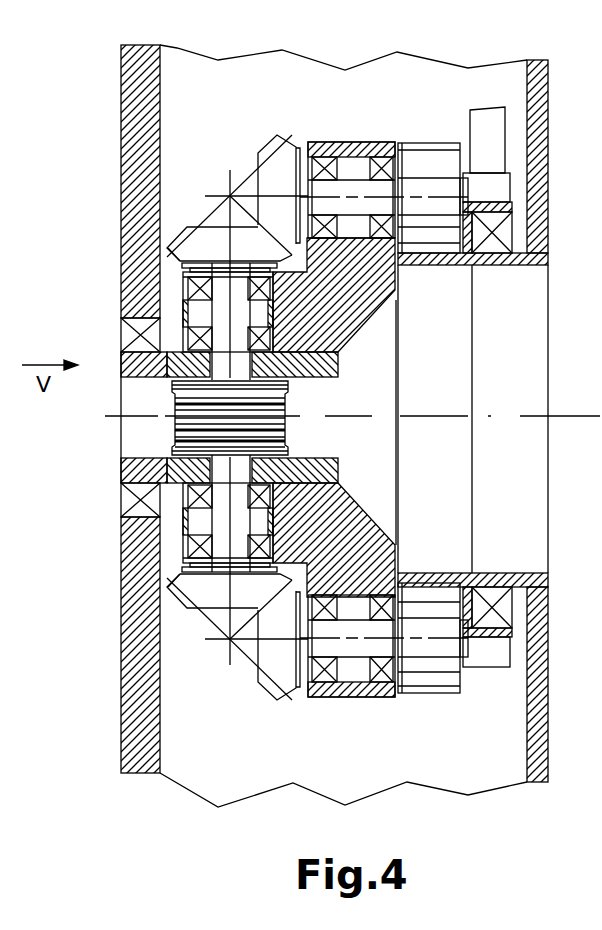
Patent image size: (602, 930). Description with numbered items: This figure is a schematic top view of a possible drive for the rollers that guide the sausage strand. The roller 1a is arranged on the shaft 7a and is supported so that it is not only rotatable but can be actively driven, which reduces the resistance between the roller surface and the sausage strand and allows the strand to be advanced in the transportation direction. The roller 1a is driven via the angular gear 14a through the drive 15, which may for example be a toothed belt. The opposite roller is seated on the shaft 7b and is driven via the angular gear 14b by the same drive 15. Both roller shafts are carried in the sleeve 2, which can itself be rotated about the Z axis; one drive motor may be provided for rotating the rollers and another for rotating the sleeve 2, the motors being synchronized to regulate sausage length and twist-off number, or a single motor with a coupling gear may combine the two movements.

The roller 1a is at (172, 443).
The sleeve 2 is at (547, 752).
The shaft 7a is at (223, 366).
The shaft 7b is at (223, 545).
The angular gear 14a is at (182, 226).
The angular gear 14b is at (258, 688).
The drive 15 is at (491, 118).